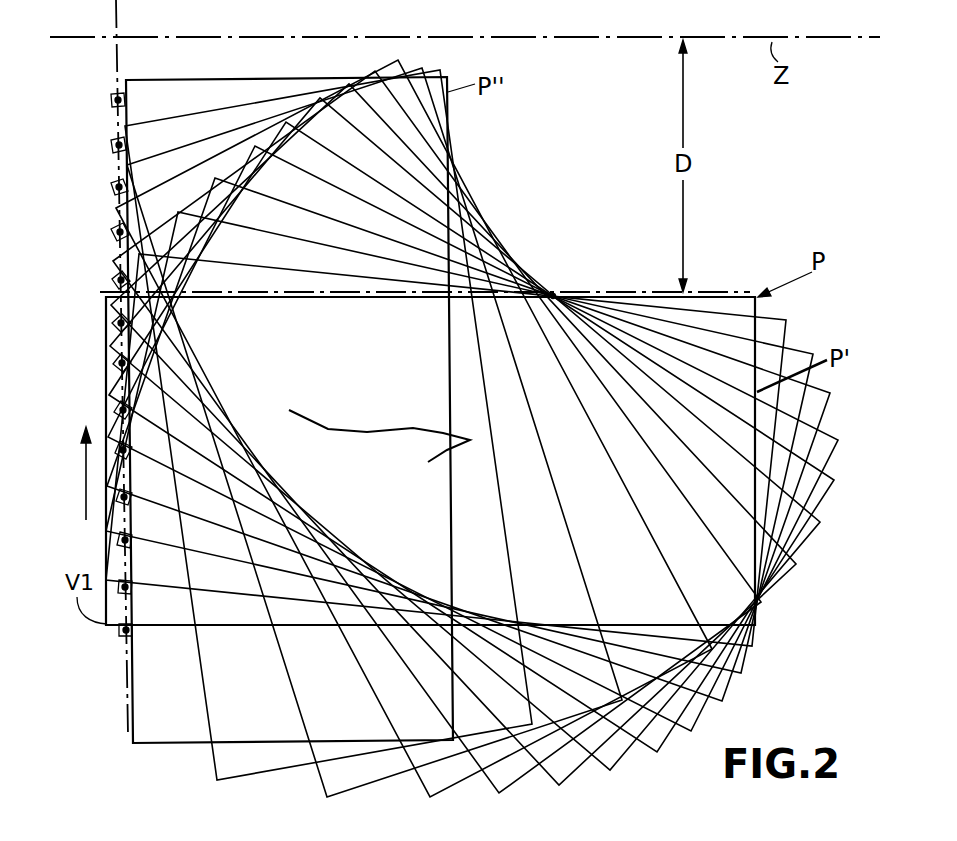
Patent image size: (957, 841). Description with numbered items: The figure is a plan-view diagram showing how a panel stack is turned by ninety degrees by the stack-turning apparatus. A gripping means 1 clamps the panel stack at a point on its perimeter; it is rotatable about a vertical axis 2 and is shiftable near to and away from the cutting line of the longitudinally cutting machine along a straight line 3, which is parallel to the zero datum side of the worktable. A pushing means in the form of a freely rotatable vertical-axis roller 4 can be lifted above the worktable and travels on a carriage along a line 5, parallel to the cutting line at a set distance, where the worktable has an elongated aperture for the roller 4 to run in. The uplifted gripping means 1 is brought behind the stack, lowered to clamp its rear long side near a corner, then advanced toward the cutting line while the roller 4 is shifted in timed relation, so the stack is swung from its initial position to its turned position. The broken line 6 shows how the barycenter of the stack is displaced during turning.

The gripping means 1 is at (113, 229).
The vertical axis 2 is at (118, 235).
The straight line 3 is at (115, 78).
The pushing roller 4 is at (484, 277).
The line 5 is at (727, 292).
The broken line 6 is at (367, 425).